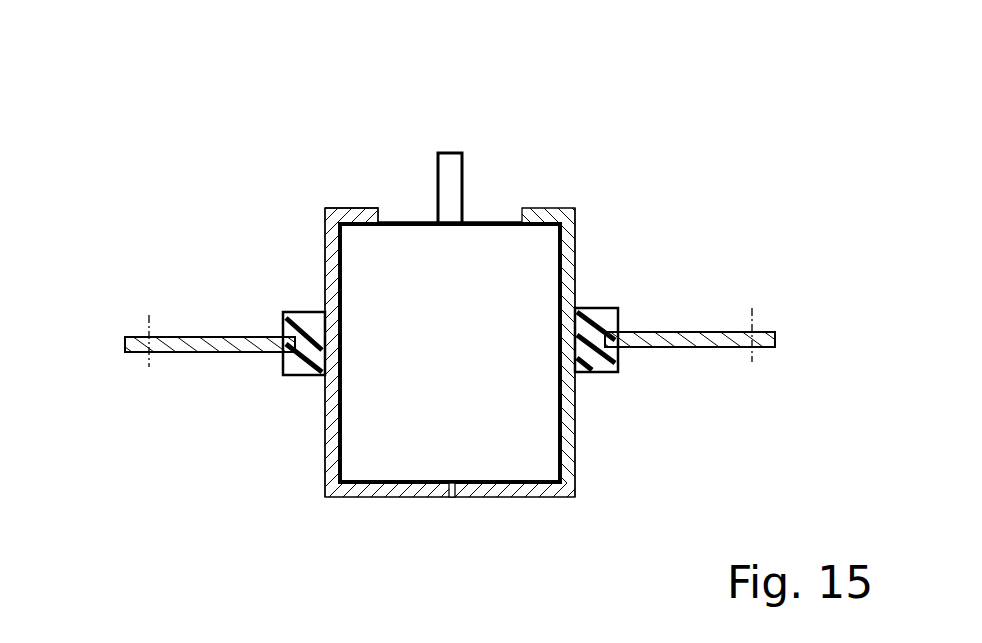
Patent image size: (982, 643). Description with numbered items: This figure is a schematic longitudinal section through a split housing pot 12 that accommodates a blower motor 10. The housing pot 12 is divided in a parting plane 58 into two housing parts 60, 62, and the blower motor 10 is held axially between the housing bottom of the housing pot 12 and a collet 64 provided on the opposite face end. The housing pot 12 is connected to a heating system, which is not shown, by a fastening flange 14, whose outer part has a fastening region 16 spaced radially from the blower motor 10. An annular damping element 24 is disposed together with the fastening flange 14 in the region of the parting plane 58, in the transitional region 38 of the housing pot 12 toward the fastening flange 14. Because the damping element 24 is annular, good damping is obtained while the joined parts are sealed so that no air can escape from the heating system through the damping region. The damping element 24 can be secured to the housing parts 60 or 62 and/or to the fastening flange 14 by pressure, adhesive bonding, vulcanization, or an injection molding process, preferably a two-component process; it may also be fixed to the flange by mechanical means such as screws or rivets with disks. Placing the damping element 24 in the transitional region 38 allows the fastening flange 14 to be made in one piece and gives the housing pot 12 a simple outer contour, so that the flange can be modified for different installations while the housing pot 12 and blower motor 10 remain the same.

The blower motor 10 is at (378, 457).
The housing pot 12 is at (527, 503).
The fastening flange 14 is at (720, 332).
The fastening region 16 is at (148, 328).
The annular damping element 24 is at (307, 362).
The transitional region 38 is at (640, 287).
The parting plane 58 is at (452, 488).
The housing part 60 is at (323, 262).
The housing part 62 is at (567, 436).
The collet 64 is at (358, 215).